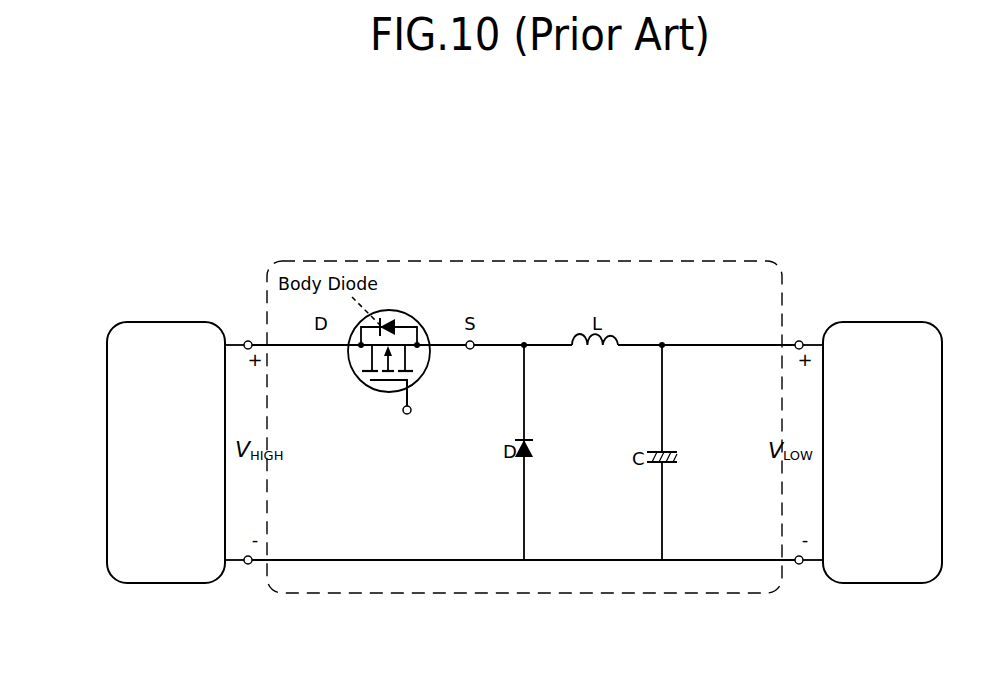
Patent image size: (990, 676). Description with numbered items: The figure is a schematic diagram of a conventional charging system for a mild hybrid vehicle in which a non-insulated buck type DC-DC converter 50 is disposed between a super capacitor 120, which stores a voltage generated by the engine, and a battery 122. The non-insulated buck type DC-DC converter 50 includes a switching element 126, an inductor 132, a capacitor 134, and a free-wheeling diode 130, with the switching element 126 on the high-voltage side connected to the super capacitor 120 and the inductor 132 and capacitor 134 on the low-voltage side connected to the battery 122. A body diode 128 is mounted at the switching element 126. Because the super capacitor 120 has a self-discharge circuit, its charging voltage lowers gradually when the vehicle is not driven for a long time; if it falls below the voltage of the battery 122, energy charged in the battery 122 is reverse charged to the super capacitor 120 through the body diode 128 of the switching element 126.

The non-insulated buck type DC-DC converter 50 is at (549, 261).
The super capacitor 120 is at (166, 432).
The battery 122 is at (882, 432).
The switching element 126 is at (389, 347).
The body diode 128 is at (403, 321).
The free-wheeling diode 130 is at (548, 451).
The inductor 132 is at (608, 312).
The capacitor 134 is at (683, 451).